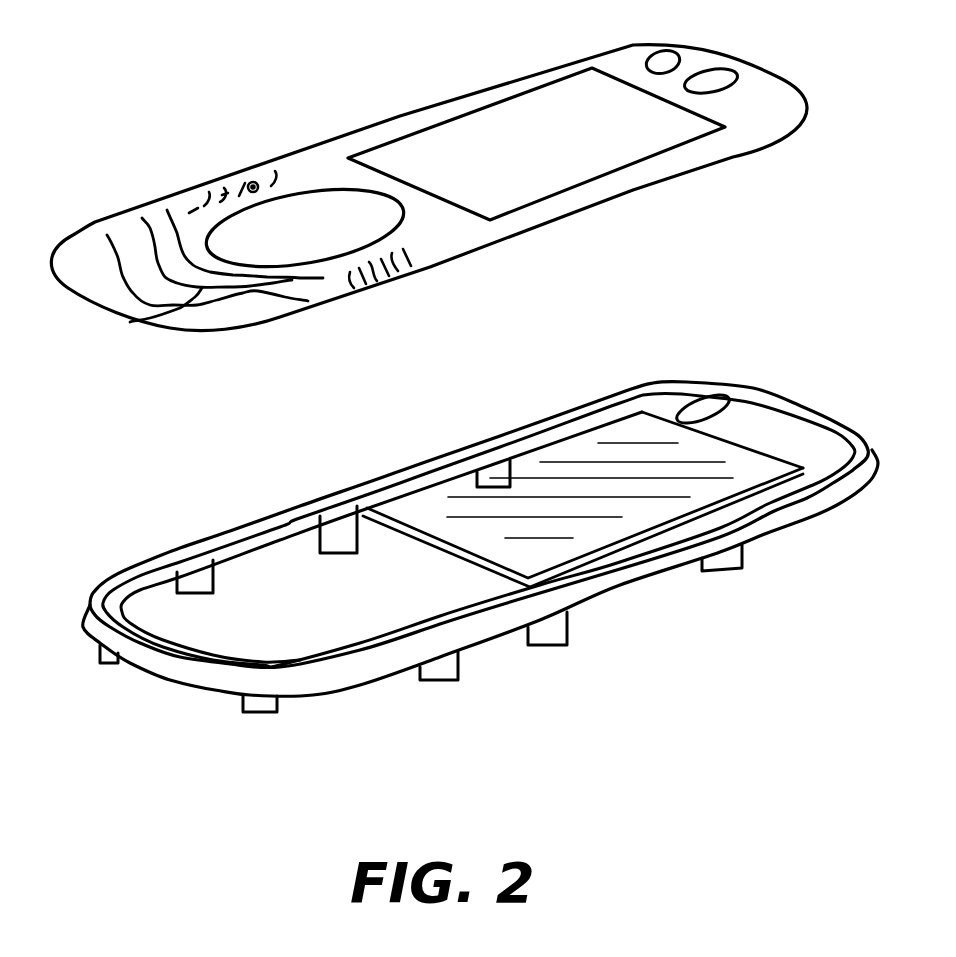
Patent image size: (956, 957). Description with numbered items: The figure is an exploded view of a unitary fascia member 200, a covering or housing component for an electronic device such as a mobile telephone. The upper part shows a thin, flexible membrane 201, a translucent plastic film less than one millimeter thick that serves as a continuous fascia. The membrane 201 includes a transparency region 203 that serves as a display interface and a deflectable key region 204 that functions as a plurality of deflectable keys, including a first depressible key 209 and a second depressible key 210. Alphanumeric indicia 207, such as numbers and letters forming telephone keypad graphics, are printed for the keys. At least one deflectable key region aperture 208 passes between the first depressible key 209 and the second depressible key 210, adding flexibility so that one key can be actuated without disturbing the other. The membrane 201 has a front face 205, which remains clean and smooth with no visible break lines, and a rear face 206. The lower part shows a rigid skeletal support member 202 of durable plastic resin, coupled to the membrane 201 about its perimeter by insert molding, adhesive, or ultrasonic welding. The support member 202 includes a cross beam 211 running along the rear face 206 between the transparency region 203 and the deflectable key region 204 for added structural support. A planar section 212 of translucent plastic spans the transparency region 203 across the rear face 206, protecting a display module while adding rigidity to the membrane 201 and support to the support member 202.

The unitary fascia member 200 is at (150, 710).
The thin, flexible membrane 201 is at (652, 188).
The rigid skeletal support member 202 is at (643, 565).
The transparency region 203 is at (448, 150).
The deflectable key region 204 is at (177, 205).
The front face 205 is at (318, 170).
The rear face 206 is at (744, 175).
The alphanumeric indicia 207 is at (158, 213).
The deflectable key region aperture 208 is at (130, 322).
The first depressible key 209 is at (307, 303).
The second depressible key 210 is at (373, 287).
The cross beam 211 is at (457, 555).
The planar section 212 is at (597, 460).